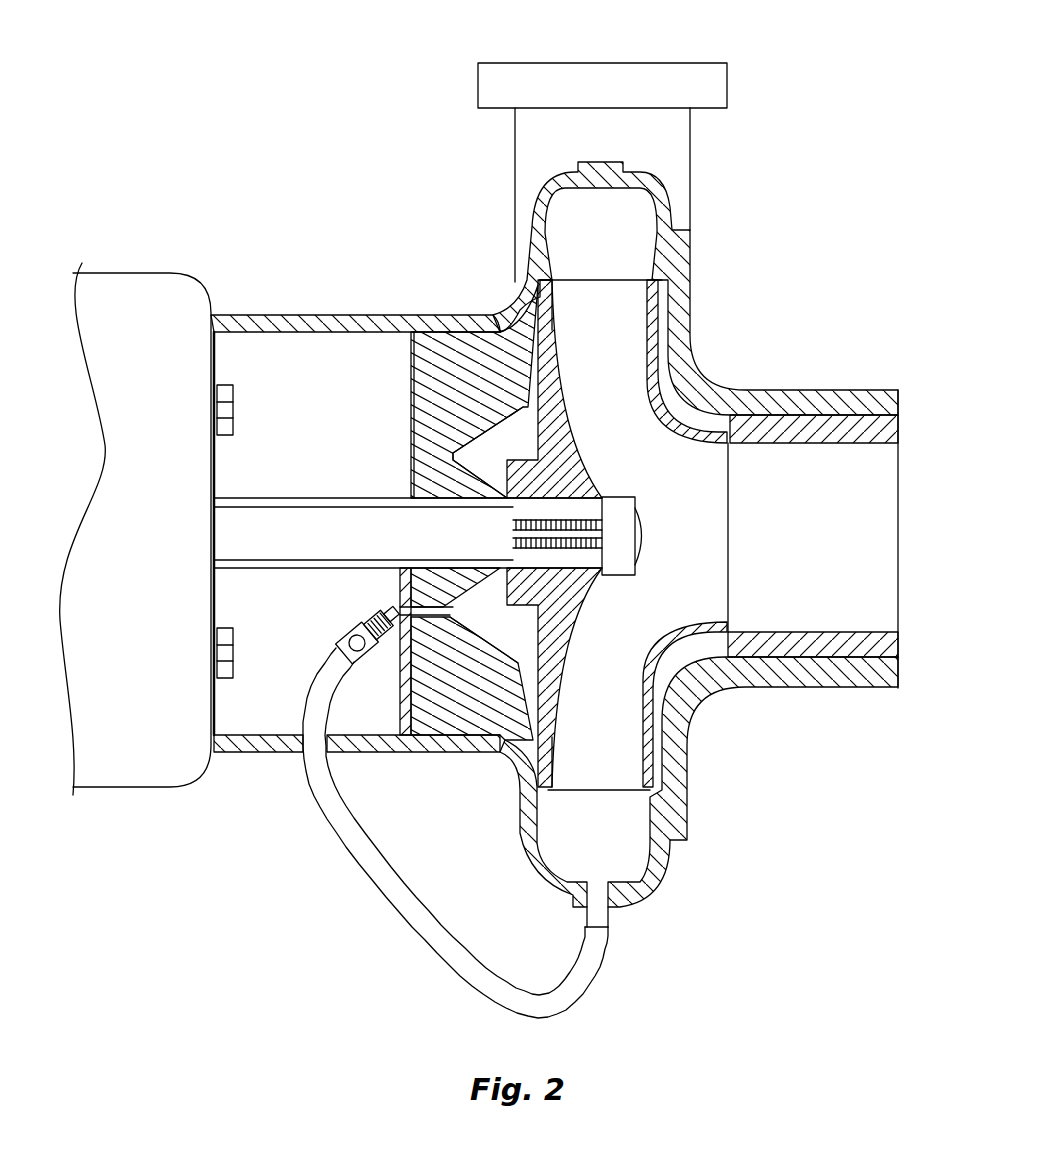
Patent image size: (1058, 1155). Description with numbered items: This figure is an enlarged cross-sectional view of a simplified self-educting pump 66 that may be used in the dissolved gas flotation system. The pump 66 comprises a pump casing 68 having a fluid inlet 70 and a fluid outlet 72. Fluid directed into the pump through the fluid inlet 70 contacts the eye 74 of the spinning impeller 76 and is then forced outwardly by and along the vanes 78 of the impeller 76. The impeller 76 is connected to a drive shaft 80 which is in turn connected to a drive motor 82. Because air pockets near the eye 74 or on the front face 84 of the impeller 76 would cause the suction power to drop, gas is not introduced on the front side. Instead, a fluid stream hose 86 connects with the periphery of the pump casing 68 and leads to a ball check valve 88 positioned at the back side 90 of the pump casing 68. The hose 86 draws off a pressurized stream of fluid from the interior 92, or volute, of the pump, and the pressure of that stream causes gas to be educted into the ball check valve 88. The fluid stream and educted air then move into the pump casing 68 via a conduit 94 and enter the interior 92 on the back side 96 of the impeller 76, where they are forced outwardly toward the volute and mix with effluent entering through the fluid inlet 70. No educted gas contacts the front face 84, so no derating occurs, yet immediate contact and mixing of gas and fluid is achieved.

The self-educting pump 66 is at (368, 240).
The pump casing 68 is at (670, 867).
The fluid inlet 70 is at (898, 472).
The fluid outlet 72 is at (647, 82).
The eye of the impeller 74 is at (643, 530).
The impeller 76 is at (597, 577).
The vanes 78 is at (558, 447).
The drive shaft 80 is at (323, 517).
The drive motor 82 is at (140, 775).
The front face of the impeller 84 is at (584, 644).
The fluid stream hose 86 is at (385, 863).
The ball check valve 88 is at (343, 637).
The back side of the pump casing 90 is at (510, 780).
The interior of the pump 92 is at (614, 248).
The conduit 94 is at (400, 588).
The back side of the impeller 96 is at (540, 440).